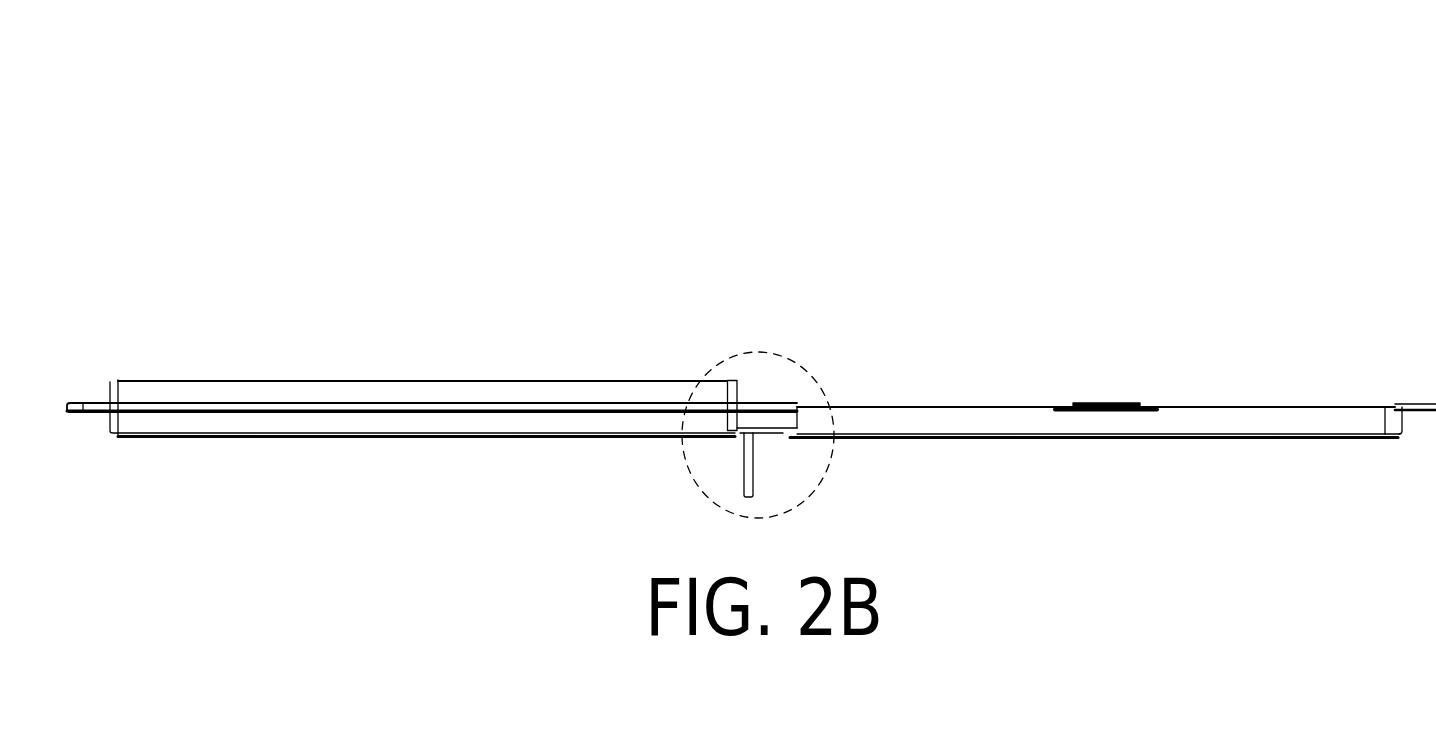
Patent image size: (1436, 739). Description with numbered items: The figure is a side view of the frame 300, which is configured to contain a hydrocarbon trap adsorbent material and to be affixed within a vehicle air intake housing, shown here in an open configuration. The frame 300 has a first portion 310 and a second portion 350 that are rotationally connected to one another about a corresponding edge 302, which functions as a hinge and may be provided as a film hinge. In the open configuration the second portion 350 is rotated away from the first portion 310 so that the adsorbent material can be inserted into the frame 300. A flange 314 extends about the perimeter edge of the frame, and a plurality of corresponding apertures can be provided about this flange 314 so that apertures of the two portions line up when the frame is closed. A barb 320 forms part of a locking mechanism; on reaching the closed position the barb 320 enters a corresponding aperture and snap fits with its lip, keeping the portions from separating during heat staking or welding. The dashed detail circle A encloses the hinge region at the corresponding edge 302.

The frame 300 is at (796, 128).
The first portion 310 is at (463, 385).
The barb 320 is at (110, 381).
The second portion 350 is at (1175, 412).
The corresponding edge 302 is at (737, 400).
The flange 314 is at (620, 413).
The detail region A is at (755, 352).